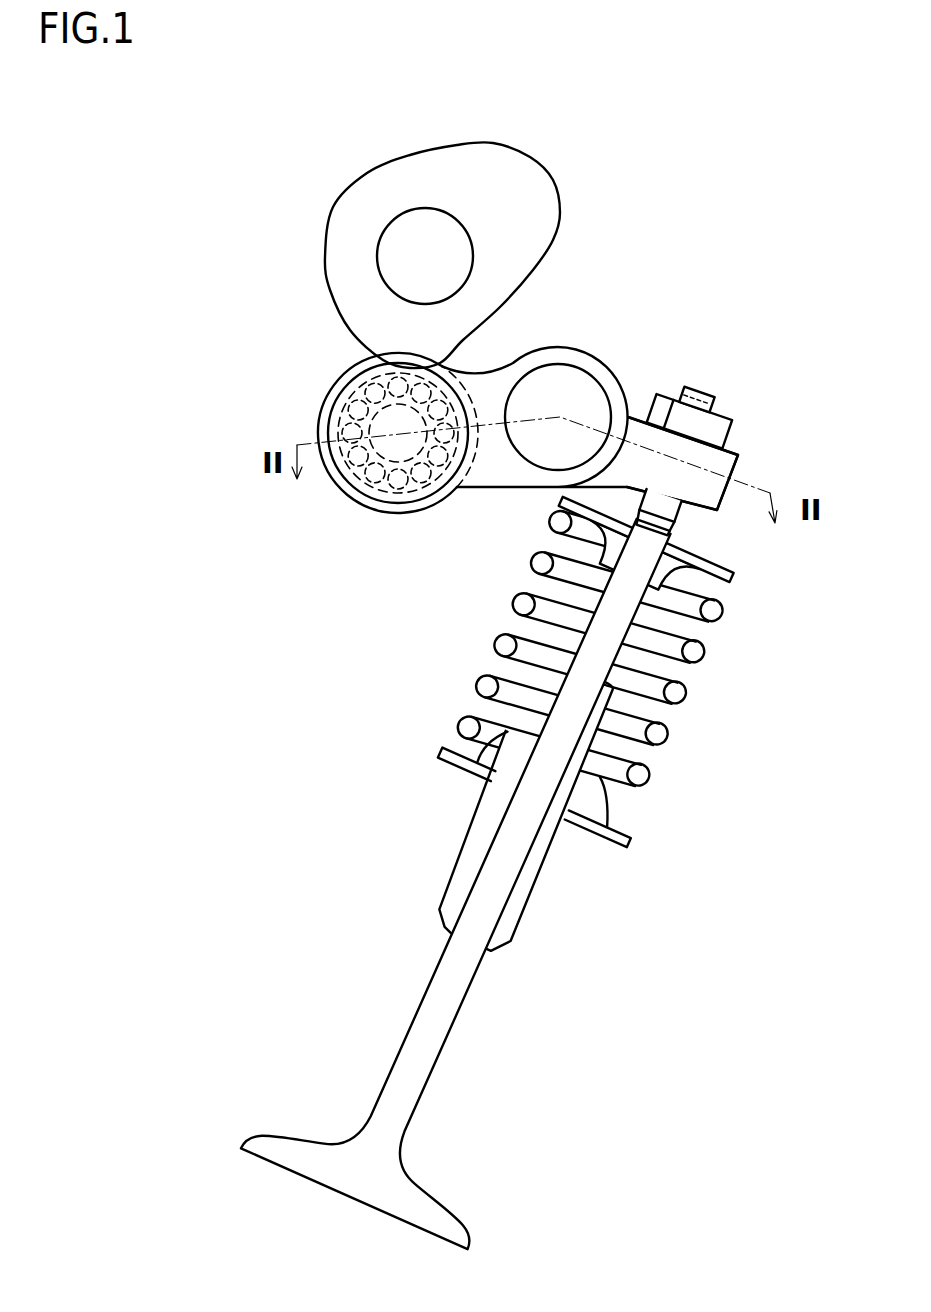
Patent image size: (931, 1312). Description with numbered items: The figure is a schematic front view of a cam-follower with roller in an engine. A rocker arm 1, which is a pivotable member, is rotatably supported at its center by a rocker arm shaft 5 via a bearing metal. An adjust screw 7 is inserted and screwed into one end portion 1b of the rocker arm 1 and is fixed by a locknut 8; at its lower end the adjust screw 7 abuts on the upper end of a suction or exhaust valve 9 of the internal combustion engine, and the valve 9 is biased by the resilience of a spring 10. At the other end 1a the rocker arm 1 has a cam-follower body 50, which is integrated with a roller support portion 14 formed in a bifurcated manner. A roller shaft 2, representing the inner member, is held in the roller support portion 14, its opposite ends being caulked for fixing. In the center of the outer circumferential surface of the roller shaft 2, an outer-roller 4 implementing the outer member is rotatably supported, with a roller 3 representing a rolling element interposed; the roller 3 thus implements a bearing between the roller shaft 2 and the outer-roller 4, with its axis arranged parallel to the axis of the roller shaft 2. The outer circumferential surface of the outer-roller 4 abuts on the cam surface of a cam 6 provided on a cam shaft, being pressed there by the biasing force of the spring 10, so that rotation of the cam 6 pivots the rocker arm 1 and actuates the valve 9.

The rocker arm 1 is at (493, 383).
The other end of rocker arm 1a is at (399, 540).
The one end portion of rocker arm 1b is at (772, 462).
The roller shaft 2 is at (377, 405).
The roller 3 is at (348, 403).
The outer-roller 4 is at (323, 427).
The rocker arm shaft 5 is at (573, 393).
The cam 6 is at (537, 205).
The adjust screw 7 is at (680, 518).
The locknut 8 is at (723, 425).
The suction valve or exhaust valve 9 is at (503, 868).
The spring 10 is at (697, 653).
The roller support portion 14 is at (380, 495).
The cam-follower body 50 is at (360, 535).